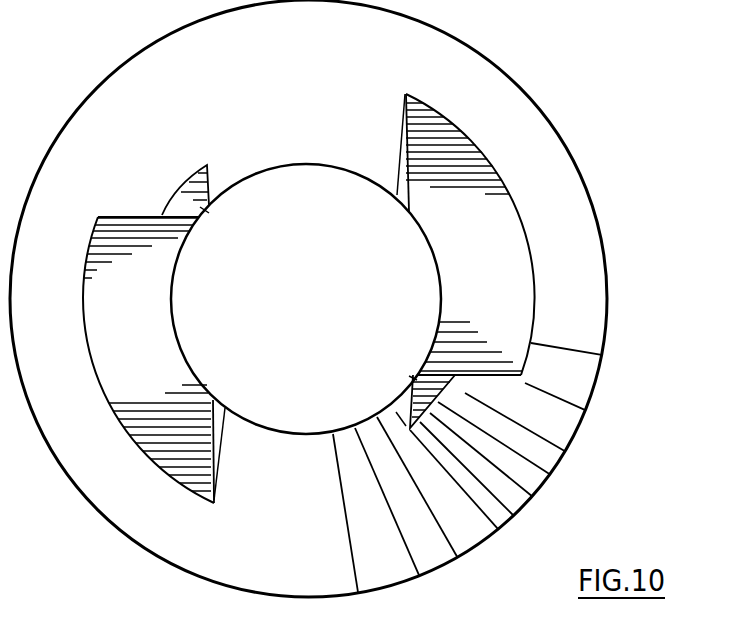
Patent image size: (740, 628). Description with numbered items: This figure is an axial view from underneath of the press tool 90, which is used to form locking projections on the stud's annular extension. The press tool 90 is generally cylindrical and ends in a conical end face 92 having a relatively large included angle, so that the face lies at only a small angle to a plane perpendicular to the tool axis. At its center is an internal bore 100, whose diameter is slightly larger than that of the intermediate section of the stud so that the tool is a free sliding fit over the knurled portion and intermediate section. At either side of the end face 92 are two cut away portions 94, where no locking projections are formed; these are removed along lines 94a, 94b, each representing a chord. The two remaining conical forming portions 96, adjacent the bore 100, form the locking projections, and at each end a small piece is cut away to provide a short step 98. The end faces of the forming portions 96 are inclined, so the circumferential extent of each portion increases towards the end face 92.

The press tool 90 is at (634, 312).
The conical end face 92 is at (447, 62).
The cut away portions 94 is at (148, 354).
The chord line 94a is at (207, 190).
The chord line 94b is at (407, 185).
The conical forming portions 96 is at (320, 130).
The short step 98 is at (201, 207).
The internal bore 100 is at (328, 342).